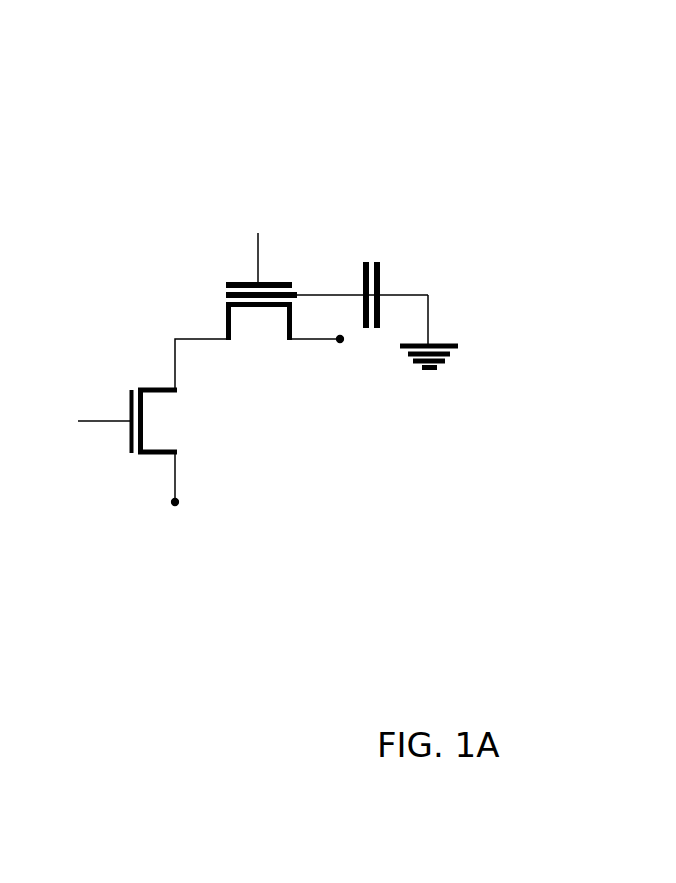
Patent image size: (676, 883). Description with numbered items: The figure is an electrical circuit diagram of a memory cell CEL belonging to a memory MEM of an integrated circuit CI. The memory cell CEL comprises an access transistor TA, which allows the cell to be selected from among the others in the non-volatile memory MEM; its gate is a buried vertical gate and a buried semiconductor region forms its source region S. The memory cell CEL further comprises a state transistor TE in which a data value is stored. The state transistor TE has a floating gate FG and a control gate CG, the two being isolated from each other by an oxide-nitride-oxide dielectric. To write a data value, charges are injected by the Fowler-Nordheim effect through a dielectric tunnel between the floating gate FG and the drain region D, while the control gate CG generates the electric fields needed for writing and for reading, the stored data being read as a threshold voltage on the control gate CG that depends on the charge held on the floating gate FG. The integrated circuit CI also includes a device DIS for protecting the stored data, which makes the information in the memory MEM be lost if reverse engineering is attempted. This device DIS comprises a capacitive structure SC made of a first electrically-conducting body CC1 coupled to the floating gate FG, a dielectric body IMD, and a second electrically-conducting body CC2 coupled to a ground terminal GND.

The integrated circuit CI is at (100, 86).
The memory MEM is at (170, 189).
The control gate CG is at (228, 283).
The floating gate FG is at (226, 292).
The state transistor TE is at (263, 334).
The drain region D is at (340, 342).
The first electrically-conducting body CC1 is at (362, 278).
The second electrically-conducting body CC2 is at (383, 270).
The dielectric body IMD is at (376, 252).
The capacitive structure SC is at (382, 349).
The ground terminal GND is at (458, 347).
The access transistor TA is at (173, 427).
The source region S is at (172, 502).
The memory cell CEL is at (313, 485).
The device for protecting the data DIS is at (382, 487).